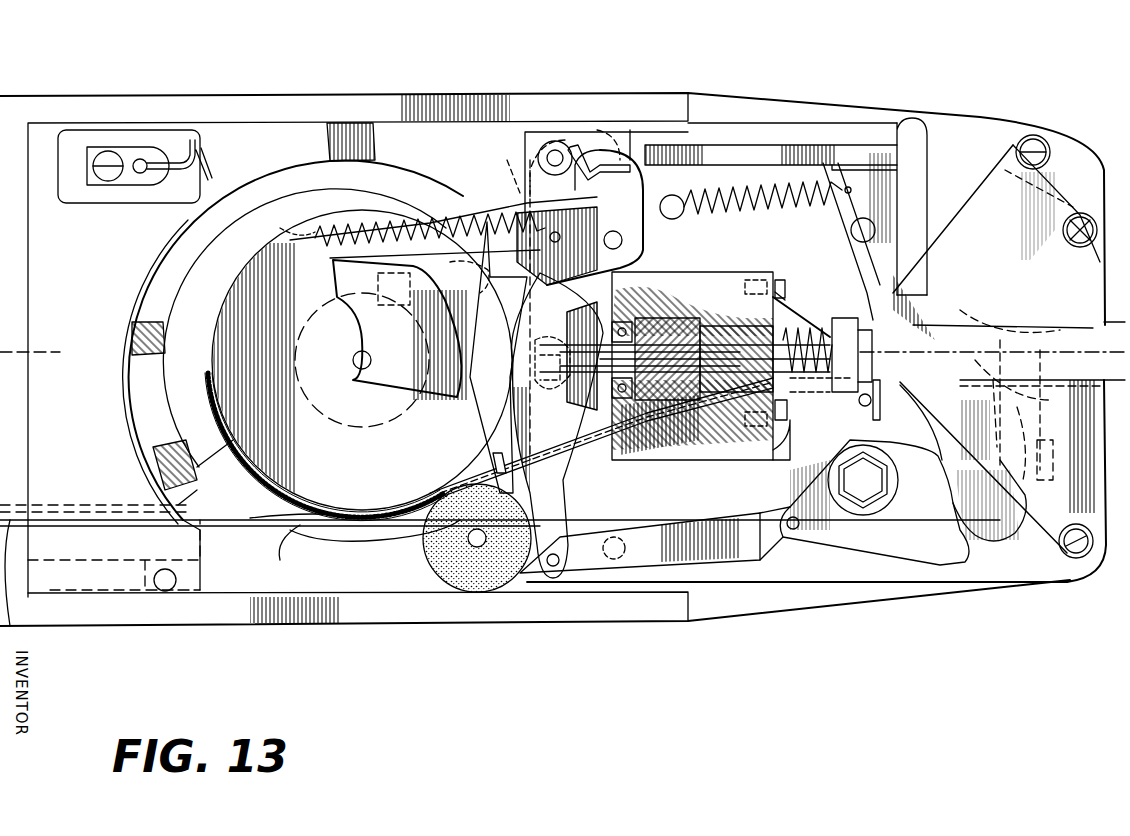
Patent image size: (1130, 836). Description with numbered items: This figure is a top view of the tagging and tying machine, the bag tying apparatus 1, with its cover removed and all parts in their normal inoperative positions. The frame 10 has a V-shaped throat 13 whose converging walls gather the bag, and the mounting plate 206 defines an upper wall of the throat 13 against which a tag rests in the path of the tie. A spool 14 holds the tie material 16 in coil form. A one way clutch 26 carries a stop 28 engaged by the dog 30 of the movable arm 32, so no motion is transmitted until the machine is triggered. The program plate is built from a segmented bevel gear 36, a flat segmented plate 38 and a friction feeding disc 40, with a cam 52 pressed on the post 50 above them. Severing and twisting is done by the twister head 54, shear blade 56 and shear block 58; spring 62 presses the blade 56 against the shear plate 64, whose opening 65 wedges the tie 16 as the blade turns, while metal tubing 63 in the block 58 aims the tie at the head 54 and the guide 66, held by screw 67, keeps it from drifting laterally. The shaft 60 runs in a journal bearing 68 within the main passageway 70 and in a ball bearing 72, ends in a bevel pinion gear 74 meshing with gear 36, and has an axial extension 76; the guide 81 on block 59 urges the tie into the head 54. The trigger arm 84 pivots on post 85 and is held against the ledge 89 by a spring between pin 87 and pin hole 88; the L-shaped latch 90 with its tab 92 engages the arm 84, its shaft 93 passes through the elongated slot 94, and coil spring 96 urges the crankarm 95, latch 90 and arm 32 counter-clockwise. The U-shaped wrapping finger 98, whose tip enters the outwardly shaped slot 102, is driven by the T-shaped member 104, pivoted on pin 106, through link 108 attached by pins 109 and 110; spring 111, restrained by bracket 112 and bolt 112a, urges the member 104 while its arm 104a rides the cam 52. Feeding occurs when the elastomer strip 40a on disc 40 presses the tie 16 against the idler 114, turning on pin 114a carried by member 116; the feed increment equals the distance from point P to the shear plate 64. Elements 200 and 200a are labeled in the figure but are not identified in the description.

The bag tying apparatus 1 is at (853, 74).
The frame 10 is at (993, 122).
The V-shaped groove or throat 13 is at (1044, 336).
The spool 14 is at (112, 500).
The tie material 16 is at (250, 530).
The one way clutch 26 is at (358, 360).
The stop 28 is at (397, 328).
The dog 30 is at (375, 286).
The movable arm 32 is at (470, 270).
The segmented bevel gear 36 is at (196, 491).
The flat segmented plate 38 is at (280, 505).
The friction feeding disc 40 is at (240, 275).
The strip 40a is at (302, 502).
The post 50 is at (372, 364).
The cam 52 is at (392, 385).
The twister head 54 is at (843, 318).
The shear blade 56 is at (785, 310).
The shear block 58 is at (735, 270).
The block 59 is at (745, 270).
The shaft 60 is at (672, 345).
The spring 62 is at (795, 340).
The metal tubing 63 is at (597, 440).
The shear plate 64 is at (770, 295).
The opening 65 is at (750, 410).
The guide 66 is at (745, 205).
The screw 67 is at (772, 465).
The journal bearing 68 is at (742, 328).
The main passageway 70 is at (690, 340).
The ball bearing 72 is at (615, 330).
The bevel pinion gear 74 is at (565, 310).
The extension 76 is at (520, 345).
The guide 81 is at (808, 280).
The trigger arm 84 is at (885, 288).
The post 85 is at (878, 228).
The pin 87 is at (660, 200).
The pin hole 88 is at (850, 165).
The ledge 89 is at (915, 440).
The L-shaped latch 90 is at (795, 145).
The tab 92 is at (915, 150).
The shaft 93 is at (553, 142).
The elongated slot 94 is at (590, 140).
The crankarm 95 is at (530, 205).
The coil spring 96 is at (466, 228).
The U-shaped wrapping finger 98 is at (1010, 510).
The outwardly shaped slot 102 is at (1040, 382).
The T-shaped member 104 is at (645, 239).
The arm 104a is at (345, 214).
The pin 106 is at (628, 260).
The link 108 is at (665, 527).
The pin 109 is at (578, 470).
The pin 110 is at (790, 535).
The spring 111 is at (190, 145).
The bracket 112 is at (140, 160).
The bolt 112a is at (106, 160).
The idler 114 is at (458, 595).
The pin 114a is at (468, 545).
The member 116 is at (280, 560).
The nut 200 is at (900, 430).
The lug 200a is at (868, 395).
The mounting plate 206 is at (1005, 250).
The point P is at (1120, 372).